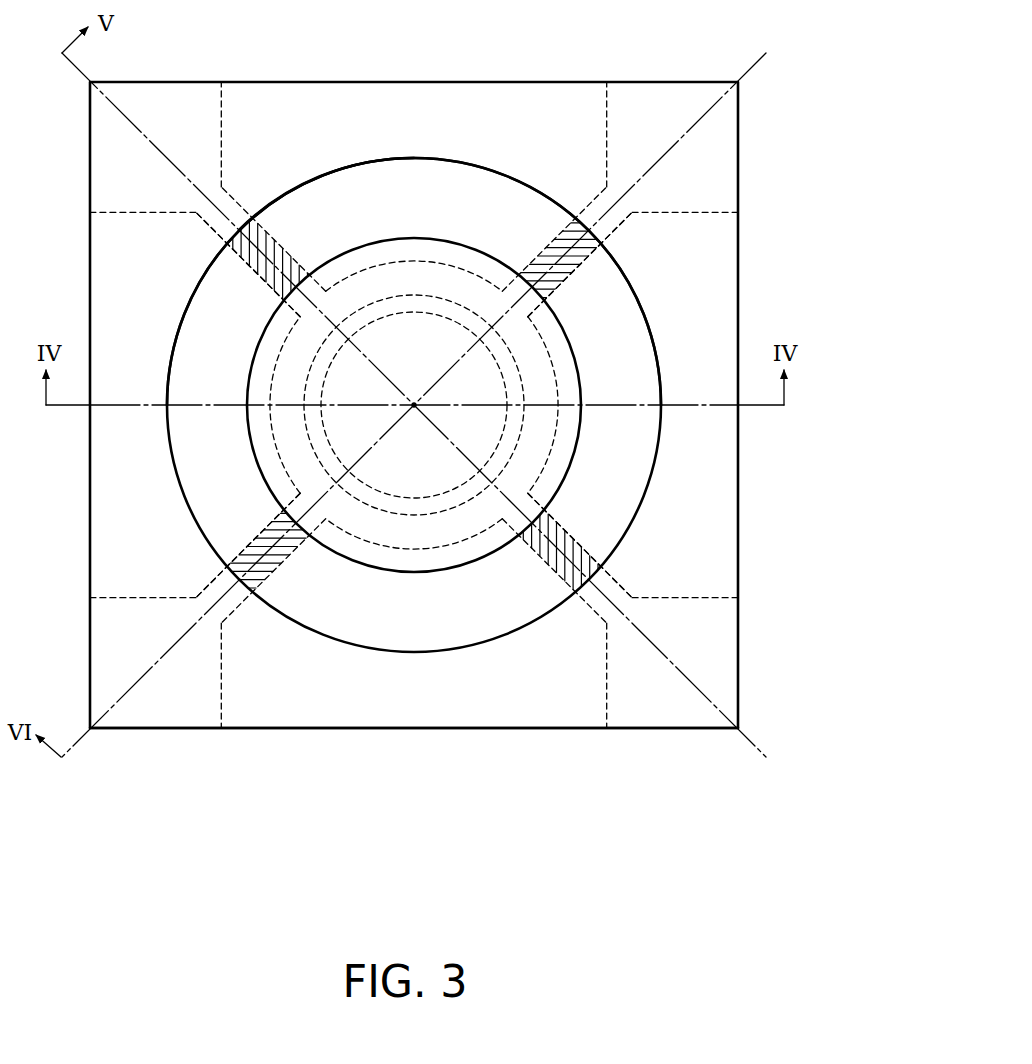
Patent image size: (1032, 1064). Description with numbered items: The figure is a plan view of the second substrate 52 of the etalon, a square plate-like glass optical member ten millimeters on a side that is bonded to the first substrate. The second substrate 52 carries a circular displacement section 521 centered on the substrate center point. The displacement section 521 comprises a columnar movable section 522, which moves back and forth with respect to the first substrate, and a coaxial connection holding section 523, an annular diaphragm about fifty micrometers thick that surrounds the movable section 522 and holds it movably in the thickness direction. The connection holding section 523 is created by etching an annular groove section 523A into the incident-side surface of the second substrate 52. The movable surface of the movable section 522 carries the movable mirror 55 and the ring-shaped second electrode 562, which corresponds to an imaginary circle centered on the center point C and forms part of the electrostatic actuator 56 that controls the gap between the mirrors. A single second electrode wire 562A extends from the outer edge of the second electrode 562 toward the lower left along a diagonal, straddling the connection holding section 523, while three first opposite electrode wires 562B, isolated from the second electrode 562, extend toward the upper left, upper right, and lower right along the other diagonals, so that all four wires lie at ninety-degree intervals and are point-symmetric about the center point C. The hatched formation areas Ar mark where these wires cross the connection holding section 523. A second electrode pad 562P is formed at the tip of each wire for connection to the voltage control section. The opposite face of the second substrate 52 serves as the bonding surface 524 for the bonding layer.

The second substrate 52 is at (525, 80).
The displacement section 521 is at (543, 175).
The movable section 522 is at (445, 238).
The connection holding section 523 is at (420, 160).
The annular groove section 523A is at (307, 197).
The bonding surface 524 is at (418, 728).
The movable mirror 55 is at (389, 322).
The electrostatic actuator 56 is at (422, 405).
The second electrode 562 is at (543, 385).
The second electrode wire 562A is at (245, 602).
The first opposite electrode wires 562B is at (197, 217).
The second electrode pad 562P is at (175, 102).
The formation area Ar is at (257, 273).
The center point C is at (415, 405).